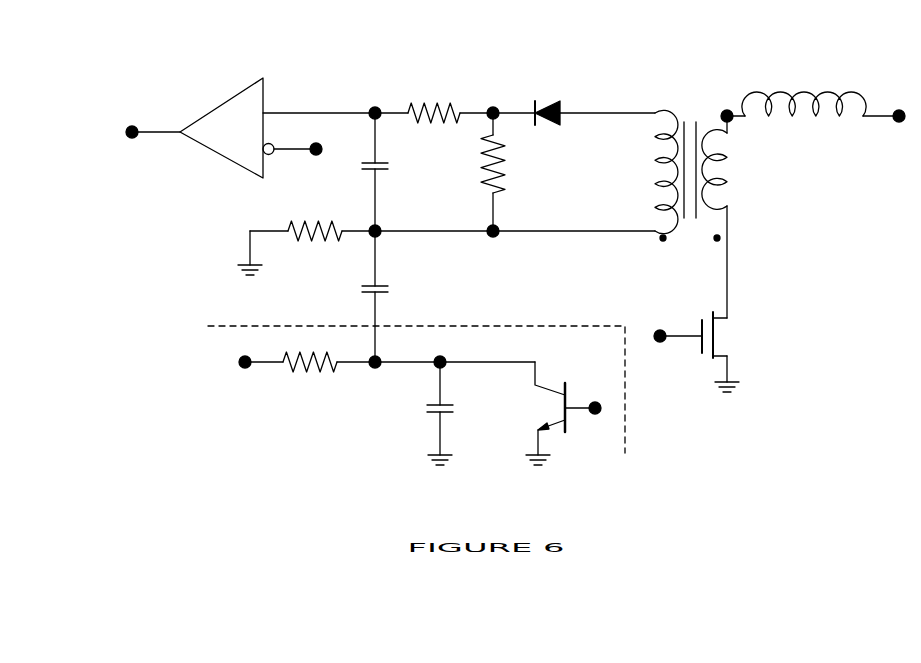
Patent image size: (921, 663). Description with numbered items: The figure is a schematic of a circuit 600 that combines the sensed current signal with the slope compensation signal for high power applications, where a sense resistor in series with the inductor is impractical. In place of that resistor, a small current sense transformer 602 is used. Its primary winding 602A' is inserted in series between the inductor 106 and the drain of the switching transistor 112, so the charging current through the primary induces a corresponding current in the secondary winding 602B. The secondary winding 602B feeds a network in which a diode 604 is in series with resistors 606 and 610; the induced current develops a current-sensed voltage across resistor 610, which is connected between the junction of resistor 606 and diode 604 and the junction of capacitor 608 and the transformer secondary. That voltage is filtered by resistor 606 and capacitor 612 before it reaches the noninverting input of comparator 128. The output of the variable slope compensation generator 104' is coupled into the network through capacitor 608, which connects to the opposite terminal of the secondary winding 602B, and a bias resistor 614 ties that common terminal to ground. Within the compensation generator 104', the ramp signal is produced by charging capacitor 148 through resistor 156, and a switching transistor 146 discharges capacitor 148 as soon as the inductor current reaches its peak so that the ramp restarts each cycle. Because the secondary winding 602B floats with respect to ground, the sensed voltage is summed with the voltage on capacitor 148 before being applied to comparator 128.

The power supply circuit 600 is at (452, 42).
The comparator 128 is at (263, 82).
The resistor 606 is at (456, 104).
The diode 604 is at (560, 103).
The current sense transformer 602 is at (722, 104).
The secondary winding 602B is at (655, 158).
The primary winding 602A' is at (744, 217).
The inductor 106 is at (865, 103).
The resistor 610 is at (505, 150).
The capacitor 612 is at (386, 163).
The bias resistor 614 is at (297, 222).
The capacitor 608 is at (384, 289).
The resistor 156 is at (285, 374).
The capacitor 148 is at (452, 405).
The switching transistor 146 is at (568, 428).
The switching transistor 112 is at (702, 350).
The variable slope compensation network 104' is at (445, 395).